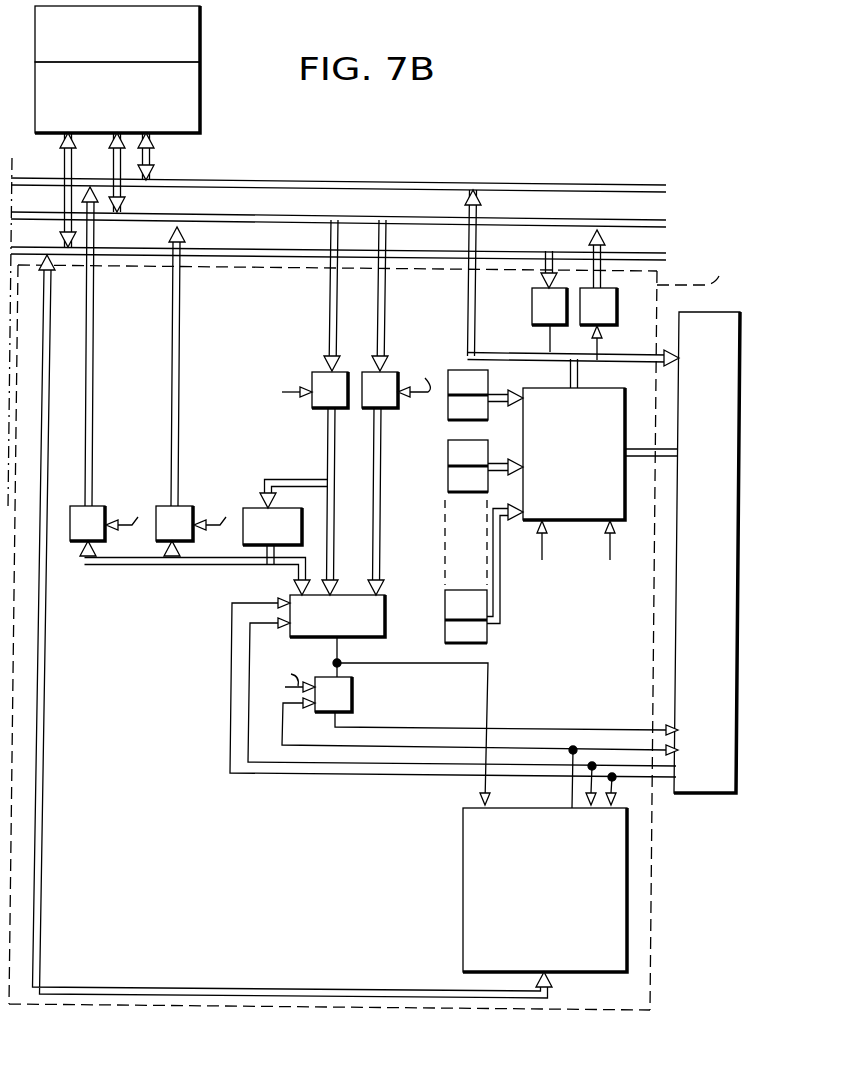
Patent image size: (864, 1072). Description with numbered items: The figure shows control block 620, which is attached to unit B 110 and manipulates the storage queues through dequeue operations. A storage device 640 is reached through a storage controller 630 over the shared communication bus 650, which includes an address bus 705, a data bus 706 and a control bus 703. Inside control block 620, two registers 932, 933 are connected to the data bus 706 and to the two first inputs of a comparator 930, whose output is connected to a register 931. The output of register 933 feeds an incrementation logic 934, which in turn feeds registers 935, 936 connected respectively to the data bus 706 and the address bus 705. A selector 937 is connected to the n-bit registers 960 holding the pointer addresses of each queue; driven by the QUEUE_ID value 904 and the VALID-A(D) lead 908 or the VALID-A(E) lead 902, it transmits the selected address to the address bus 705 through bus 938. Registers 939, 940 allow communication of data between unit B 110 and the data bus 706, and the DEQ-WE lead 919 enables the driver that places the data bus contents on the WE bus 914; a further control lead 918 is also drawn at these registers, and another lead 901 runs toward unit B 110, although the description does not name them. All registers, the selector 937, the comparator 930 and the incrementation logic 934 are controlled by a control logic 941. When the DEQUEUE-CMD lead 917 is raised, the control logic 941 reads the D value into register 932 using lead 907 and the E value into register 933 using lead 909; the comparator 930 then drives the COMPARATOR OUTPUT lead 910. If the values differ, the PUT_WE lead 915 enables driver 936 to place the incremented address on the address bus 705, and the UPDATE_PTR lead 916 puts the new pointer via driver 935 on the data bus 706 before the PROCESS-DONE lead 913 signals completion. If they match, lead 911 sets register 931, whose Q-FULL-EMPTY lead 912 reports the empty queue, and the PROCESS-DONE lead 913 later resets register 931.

The storage device 640 is at (203, 53).
The storage controller 630 is at (203, 110).
The communication bus 650 is at (165, 163).
The address bus 705 is at (560, 185).
The data bus 706 is at (503, 219).
The control bus 703 is at (412, 250).
The control block 620 is at (388, 584).
The bus 938 is at (468, 312).
The DEQ-WE lead 919 is at (522, 308).
The register 918 is at (640, 297).
The register 940 is at (493, 602).
The register 939 is at (632, 334).
The selector 937 is at (595, 390).
The WE bus 914 is at (652, 372).
The QUEUE_ID value 904 is at (650, 460).
The VALID-A(D) lead 908 is at (387, 838).
The VALID-A(E) lead 902 is at (439, 818).
The unit B 110 is at (693, 795).
The n-bit registers 960 is at (422, 630).
The lead 907 is at (463, 856).
The register 933 is at (320, 409).
The register 932 is at (395, 409).
The lead 909 is at (463, 873).
The incrementation logic 934 is at (257, 506).
The register 935 is at (163, 506).
The register 936 is at (72, 542).
The PUT_WE lead 915 is at (463, 911).
The UPDATE_PTR lead 916 is at (463, 930).
The comparator 930 is at (290, 597).
The register 931 is at (353, 695).
The lead 911 is at (463, 892).
The Q-FULL-EMPTY lead 912 is at (345, 728).
The PROCESS-DONE lead 913 is at (584, 748).
The COMPARATOR OUTPUT lead 910 is at (488, 712).
The DEQUEUE-CMD lead 917 is at (585, 787).
The signal line 901 is at (615, 783).
The control logic 941 is at (592, 974).